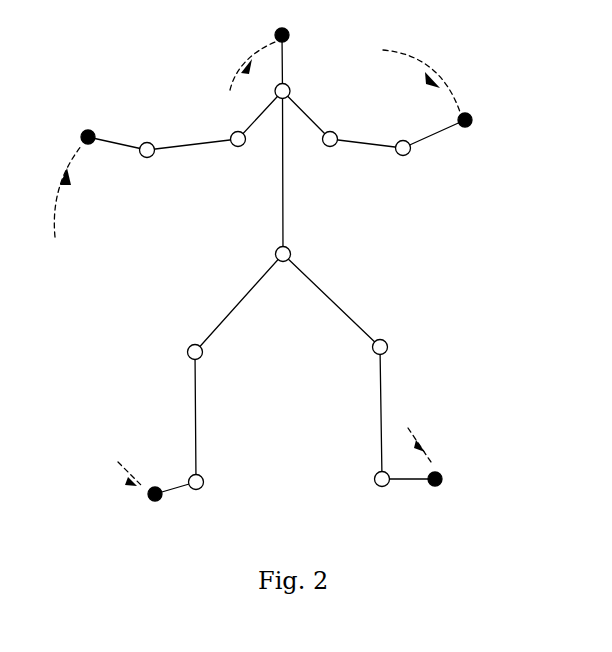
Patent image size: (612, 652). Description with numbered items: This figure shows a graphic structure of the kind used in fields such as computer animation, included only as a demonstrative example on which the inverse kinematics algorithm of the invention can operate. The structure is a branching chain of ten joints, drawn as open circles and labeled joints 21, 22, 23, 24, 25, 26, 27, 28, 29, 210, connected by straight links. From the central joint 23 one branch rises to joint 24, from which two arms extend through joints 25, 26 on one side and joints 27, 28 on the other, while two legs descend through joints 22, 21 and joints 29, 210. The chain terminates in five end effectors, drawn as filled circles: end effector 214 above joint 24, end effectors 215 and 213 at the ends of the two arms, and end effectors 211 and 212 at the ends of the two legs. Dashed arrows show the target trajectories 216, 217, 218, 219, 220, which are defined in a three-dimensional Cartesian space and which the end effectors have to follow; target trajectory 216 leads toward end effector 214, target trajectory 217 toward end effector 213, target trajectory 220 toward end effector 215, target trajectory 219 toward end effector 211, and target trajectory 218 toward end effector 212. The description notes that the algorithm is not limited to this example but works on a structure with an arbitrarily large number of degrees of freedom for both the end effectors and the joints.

The joint 21 is at (205, 485).
The joint 22 is at (207, 357).
The joint 23 is at (303, 253).
The joint 24 is at (290, 93).
The joint 25 is at (243, 144).
The joint 26 is at (153, 155).
The joint 27 is at (335, 144).
The joint 28 is at (410, 152).
The joint 29 is at (391, 346).
The joint 210 is at (387, 485).
The end effector 211 is at (162, 500).
The end effector 212 is at (443, 483).
The end effector 213 is at (472, 122).
The end effector 214 is at (289, 37).
The end effector 215 is at (93, 141).
The target trajectory 216 is at (246, 65).
The target trajectory 217 is at (430, 80).
The target trajectory 218 is at (427, 446).
The target trajectory 219 is at (127, 470).
The target trajectory 220 is at (58, 211).